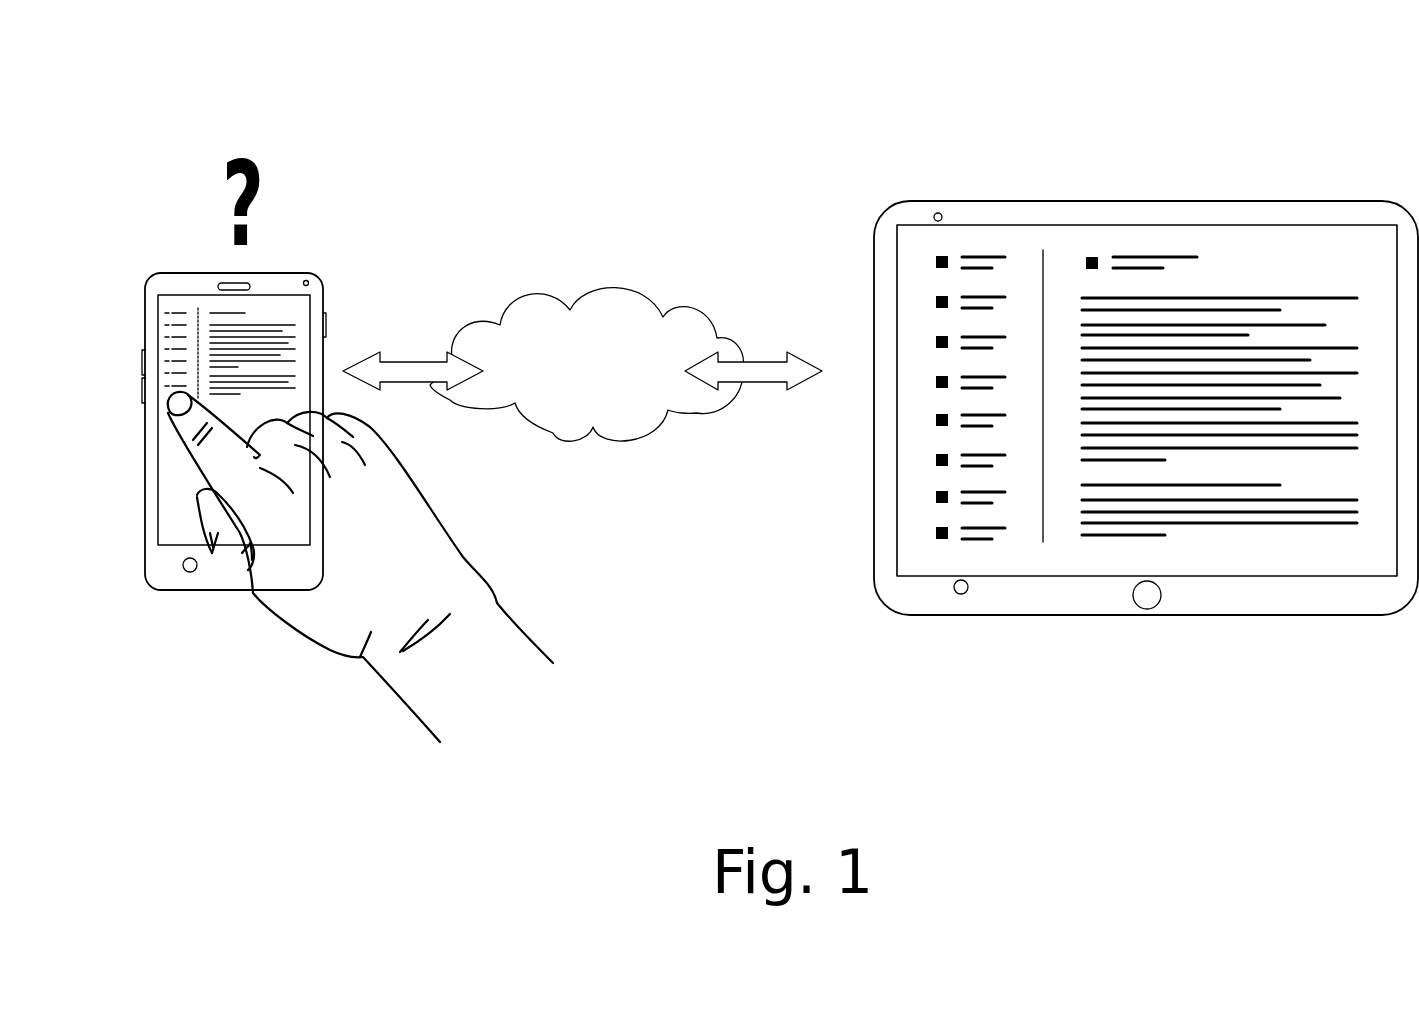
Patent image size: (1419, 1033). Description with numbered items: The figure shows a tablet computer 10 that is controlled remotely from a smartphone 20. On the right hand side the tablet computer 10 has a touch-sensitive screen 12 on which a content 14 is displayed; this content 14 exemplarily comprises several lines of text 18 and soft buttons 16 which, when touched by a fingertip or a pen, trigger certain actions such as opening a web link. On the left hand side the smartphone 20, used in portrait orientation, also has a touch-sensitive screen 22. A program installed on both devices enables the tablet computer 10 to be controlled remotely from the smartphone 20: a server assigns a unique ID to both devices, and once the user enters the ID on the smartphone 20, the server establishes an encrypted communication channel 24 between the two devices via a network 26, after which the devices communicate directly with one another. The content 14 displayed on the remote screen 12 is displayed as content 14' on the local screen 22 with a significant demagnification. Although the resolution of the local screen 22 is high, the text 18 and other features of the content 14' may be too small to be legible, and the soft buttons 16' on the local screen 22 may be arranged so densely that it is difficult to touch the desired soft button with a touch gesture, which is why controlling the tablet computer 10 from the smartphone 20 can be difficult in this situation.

The tablet computer 10 is at (1146, 389).
The touch-sensitive screen 12 is at (1219, 562).
The content 14 is at (1192, 481).
The soft buttons 16 is at (970, 326).
The lines of text 18 is at (1235, 297).
The smartphone 20 is at (278, 377).
The touch-sensitive screen 22 is at (183, 313).
The encrypted communication channel 24 is at (758, 383).
The network 26 is at (609, 303).
The content 14' is at (343, 325).
The soft buttons 16' is at (133, 349).